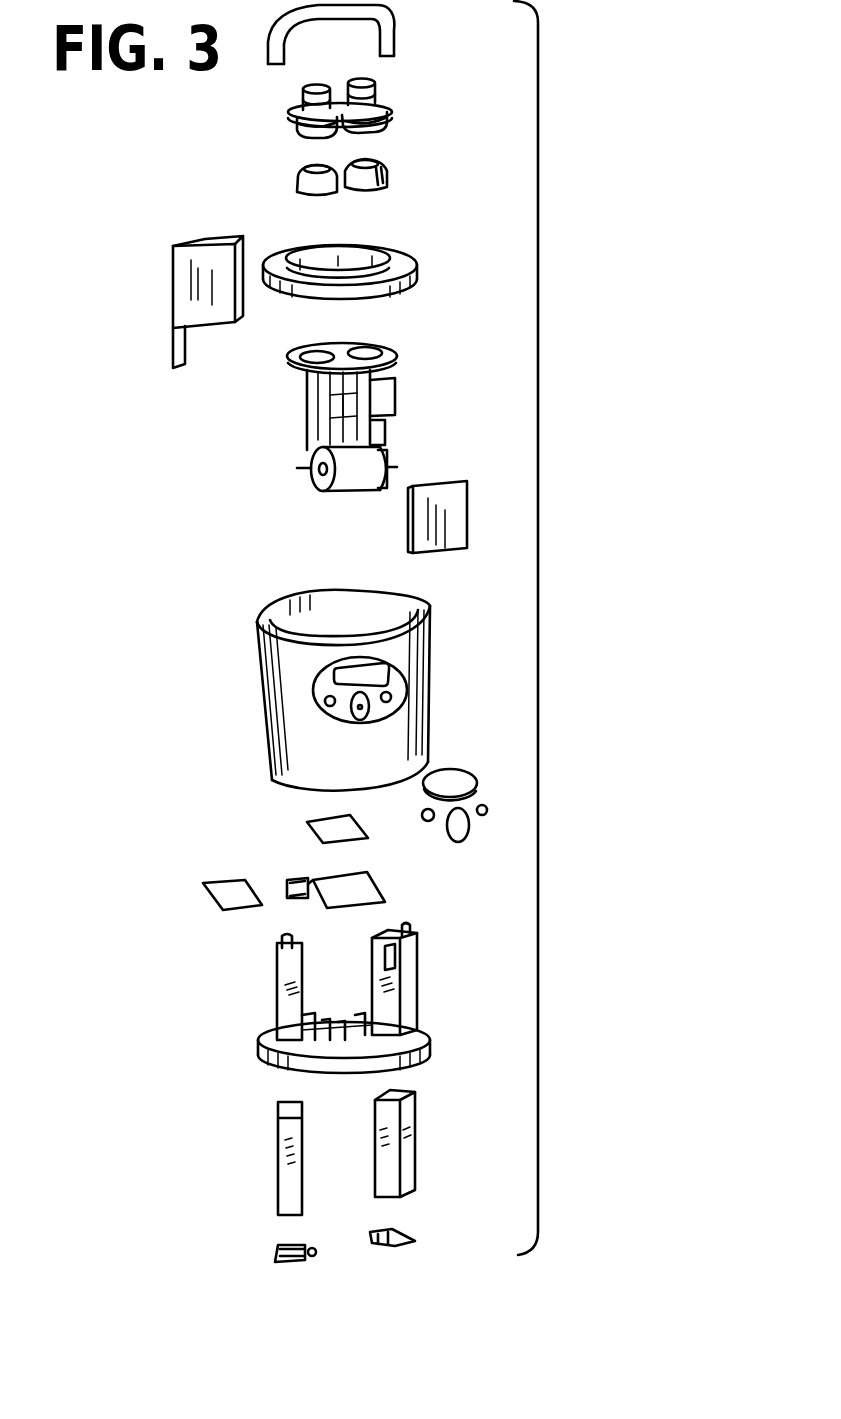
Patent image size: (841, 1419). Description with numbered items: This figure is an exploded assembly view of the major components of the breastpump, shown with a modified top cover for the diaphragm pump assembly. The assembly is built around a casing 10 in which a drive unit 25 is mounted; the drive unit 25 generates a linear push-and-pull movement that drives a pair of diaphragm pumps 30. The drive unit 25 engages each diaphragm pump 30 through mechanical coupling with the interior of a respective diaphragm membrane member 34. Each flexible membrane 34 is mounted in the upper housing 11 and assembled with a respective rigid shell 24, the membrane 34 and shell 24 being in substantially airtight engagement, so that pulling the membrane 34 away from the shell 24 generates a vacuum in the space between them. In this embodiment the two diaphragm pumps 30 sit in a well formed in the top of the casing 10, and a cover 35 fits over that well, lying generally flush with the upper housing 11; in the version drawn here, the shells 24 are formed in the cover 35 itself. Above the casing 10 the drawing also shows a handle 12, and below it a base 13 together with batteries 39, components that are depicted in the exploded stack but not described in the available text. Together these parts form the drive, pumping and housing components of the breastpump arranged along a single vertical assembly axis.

The casing 10 is at (433, 700).
The upper housing 11 is at (418, 270).
The handle 12 is at (380, 8).
The base 13 is at (425, 1033).
The rigid shell 24 is at (295, 127).
The drive unit 25 is at (412, 438).
The diaphragm pump 30 is at (339, 152).
The diaphragm membrane member 34 is at (295, 179).
The cover 35 is at (378, 100).
The batteries 39 is at (275, 1152).